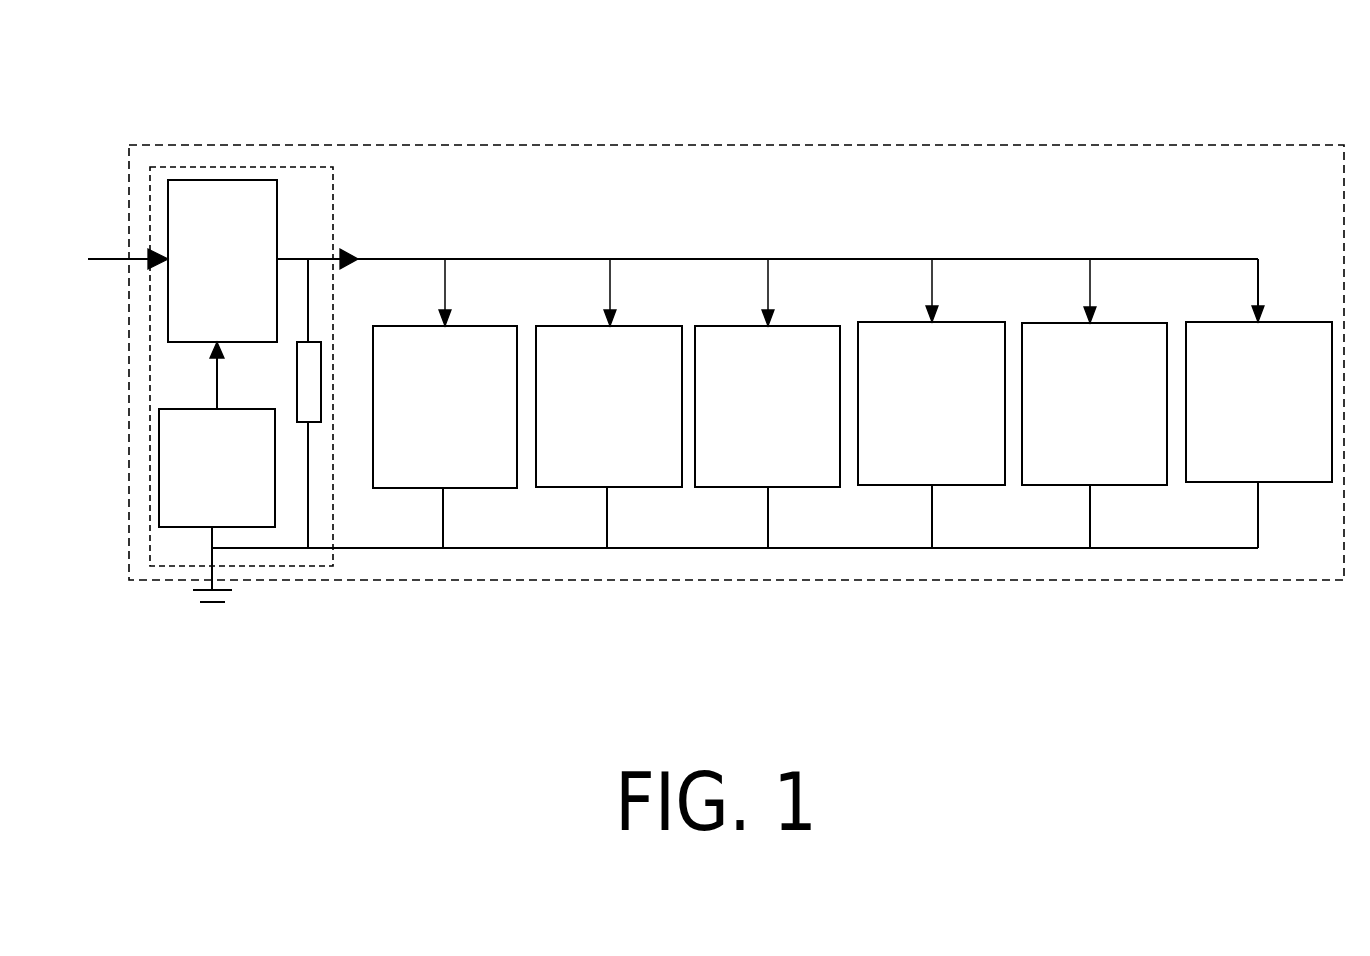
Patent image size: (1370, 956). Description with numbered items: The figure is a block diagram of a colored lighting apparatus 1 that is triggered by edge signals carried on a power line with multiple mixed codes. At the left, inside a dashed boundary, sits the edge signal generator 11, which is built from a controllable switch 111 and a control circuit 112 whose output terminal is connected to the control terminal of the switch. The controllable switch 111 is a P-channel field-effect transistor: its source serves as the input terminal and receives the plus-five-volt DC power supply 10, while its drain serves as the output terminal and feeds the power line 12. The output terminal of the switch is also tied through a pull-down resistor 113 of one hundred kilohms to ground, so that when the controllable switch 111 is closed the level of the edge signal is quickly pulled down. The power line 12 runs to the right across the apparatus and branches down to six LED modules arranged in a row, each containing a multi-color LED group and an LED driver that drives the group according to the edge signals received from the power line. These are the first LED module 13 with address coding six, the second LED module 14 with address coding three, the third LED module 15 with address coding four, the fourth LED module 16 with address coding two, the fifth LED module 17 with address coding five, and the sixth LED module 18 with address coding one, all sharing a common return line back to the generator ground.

The colored lighting apparatus 1 is at (129, 147).
The DC power supply 10 is at (108, 260).
The edge signal generator 11 is at (333, 167).
The controllable switch 111 is at (196, 180).
The control circuit 112 is at (275, 487).
The pull-down resistor 113 is at (321, 408).
The power line 12 is at (395, 259).
The LED module 1 13 is at (500, 326).
The LED module 2 14 is at (632, 326).
The LED module 3 15 is at (793, 326).
The LED module 4 16 is at (955, 322).
The LED module 5 17 is at (1120, 323).
The LED module 6 18 is at (1268, 322).